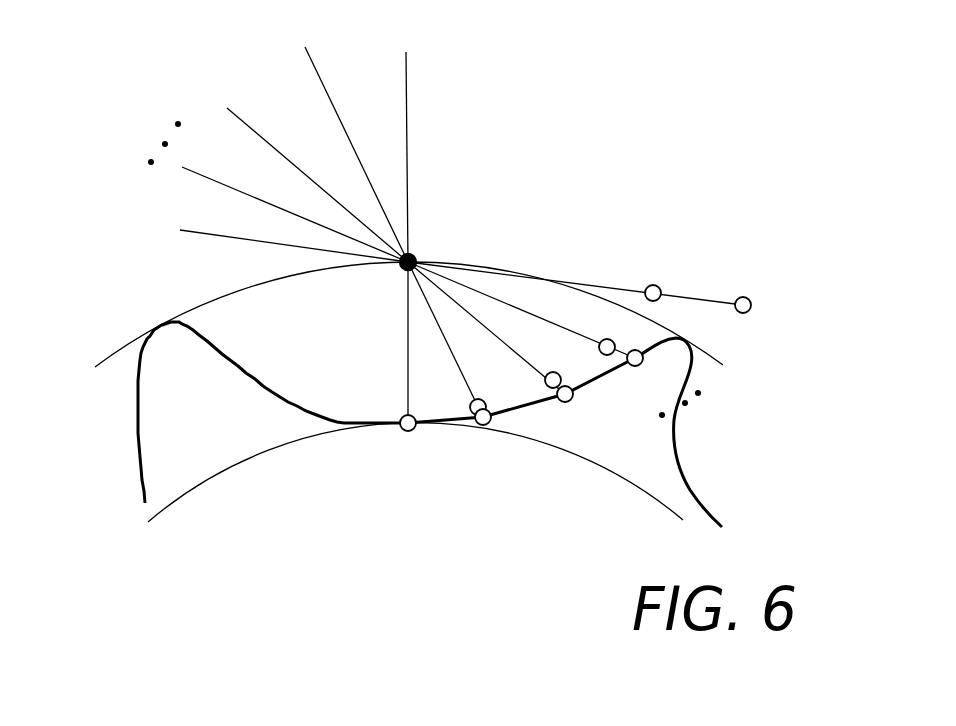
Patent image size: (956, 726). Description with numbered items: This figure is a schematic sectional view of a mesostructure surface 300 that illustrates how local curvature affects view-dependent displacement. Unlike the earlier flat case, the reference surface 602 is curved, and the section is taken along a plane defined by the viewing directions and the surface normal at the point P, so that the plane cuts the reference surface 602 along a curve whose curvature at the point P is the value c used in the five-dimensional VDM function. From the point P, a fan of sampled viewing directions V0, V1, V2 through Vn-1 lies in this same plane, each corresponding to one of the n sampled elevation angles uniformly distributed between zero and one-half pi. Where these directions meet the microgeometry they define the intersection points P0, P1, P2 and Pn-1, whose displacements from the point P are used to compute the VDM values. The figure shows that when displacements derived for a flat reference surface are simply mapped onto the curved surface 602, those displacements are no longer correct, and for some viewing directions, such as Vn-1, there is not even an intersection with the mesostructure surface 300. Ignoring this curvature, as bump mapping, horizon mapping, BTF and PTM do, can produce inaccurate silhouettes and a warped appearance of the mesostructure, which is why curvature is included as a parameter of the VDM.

The curved reference surface 602 is at (409, 260).
The mesostructure surface 300 is at (483, 424).
The point P is at (420, 238).
The view direction V0 is at (414, 133).
The view direction V1 is at (338, 135).
The view direction V2 is at (299, 164).
The view direction Vn-1 is at (255, 234).
The intersection point P0 is at (415, 391).
The intersection point P1 is at (464, 381).
The intersection point P2 is at (504, 369).
The intersection point Pn-1 is at (621, 314).